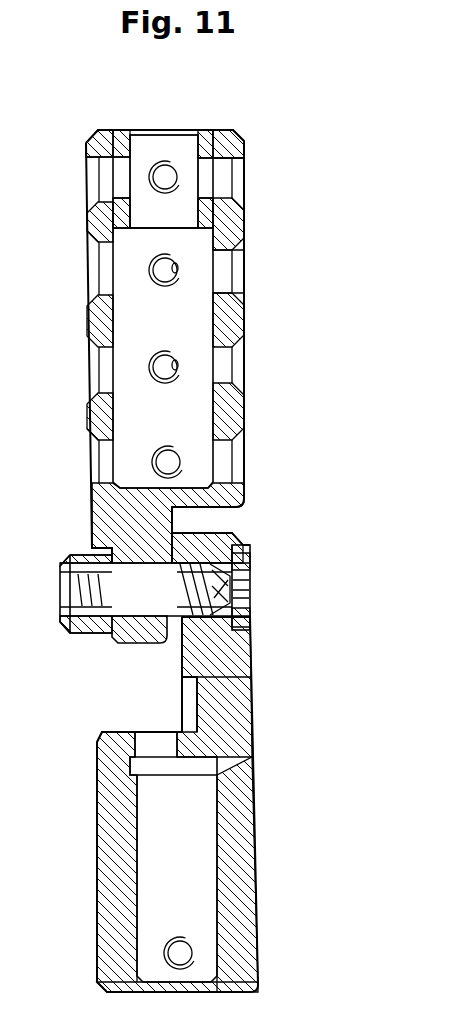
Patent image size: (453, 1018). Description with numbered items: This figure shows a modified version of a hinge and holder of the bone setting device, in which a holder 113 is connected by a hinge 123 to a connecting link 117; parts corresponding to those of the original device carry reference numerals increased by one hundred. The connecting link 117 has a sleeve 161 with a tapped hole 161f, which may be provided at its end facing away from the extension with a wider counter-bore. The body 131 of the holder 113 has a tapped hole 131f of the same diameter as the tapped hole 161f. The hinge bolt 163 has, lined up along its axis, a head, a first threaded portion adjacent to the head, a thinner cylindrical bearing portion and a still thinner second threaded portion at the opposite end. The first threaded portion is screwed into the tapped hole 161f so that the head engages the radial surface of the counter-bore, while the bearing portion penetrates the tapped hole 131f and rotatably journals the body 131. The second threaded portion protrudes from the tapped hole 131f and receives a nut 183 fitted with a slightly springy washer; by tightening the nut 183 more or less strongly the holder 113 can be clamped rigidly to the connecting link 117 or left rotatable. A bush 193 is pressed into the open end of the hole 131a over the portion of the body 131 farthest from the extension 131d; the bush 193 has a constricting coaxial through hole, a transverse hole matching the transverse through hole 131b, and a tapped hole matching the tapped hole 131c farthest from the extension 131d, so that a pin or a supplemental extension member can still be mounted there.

The holder 113 is at (258, 430).
The bush 193 is at (123, 143).
The body 131 is at (245, 319).
The hole 131a is at (215, 308).
The transverse through hole 131b is at (244, 176).
The tapped hole 131c is at (177, 262).
The extension 131d is at (116, 638).
The tapped hole 131f is at (92, 520).
The nut 183 is at (72, 557).
The hinge 123 is at (263, 580).
The hinge bolt 163 is at (252, 553).
The tapped hole 161f is at (252, 600).
The connecting link 117 is at (262, 728).
The sleeve 161 is at (255, 838).